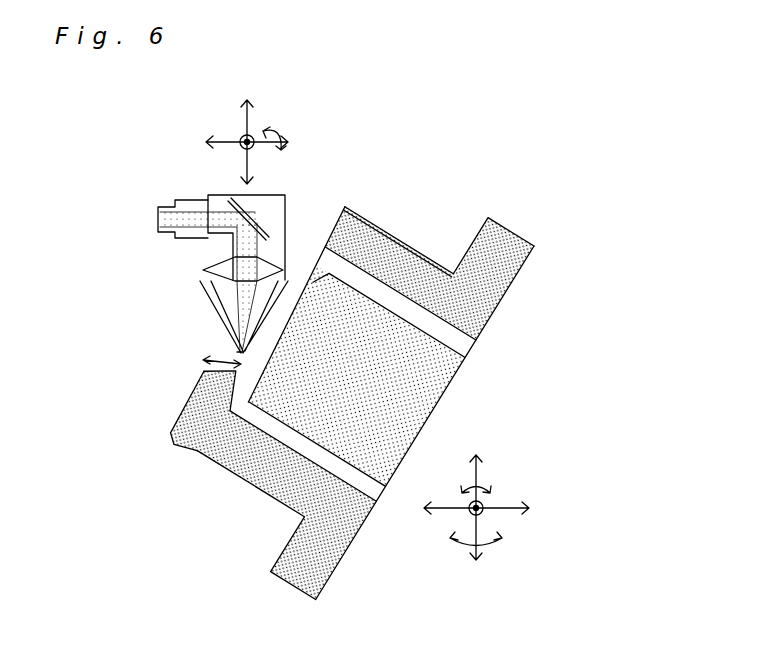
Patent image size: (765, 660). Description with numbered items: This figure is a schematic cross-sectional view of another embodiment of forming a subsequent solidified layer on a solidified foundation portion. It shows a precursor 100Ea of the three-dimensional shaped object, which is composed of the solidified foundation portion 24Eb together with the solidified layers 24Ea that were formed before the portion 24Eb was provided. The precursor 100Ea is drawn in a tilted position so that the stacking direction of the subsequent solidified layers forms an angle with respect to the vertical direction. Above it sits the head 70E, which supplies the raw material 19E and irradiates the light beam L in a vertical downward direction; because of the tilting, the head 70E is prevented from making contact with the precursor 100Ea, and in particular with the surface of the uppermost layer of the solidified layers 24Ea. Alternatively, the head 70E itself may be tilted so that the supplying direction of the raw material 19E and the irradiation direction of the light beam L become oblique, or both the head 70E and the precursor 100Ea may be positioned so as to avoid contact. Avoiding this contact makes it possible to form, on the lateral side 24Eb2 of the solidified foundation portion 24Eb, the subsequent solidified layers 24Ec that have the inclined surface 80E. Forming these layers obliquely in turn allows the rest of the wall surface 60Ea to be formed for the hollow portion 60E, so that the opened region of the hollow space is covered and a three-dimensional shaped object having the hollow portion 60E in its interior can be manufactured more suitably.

The precursor of the three-dimensional shaped object 100Ea is at (335, 337).
The head 70E is at (284, 219).
The light beam L is at (238, 347).
The raw material 19E is at (238, 351).
The inclined surface 80E is at (203, 360).
The hollow portion 60E is at (370, 220).
The wall surface 60Ea is at (352, 207).
The solidified layers 24Ea is at (385, 258).
The solidified foundation portion 24Eb is at (175, 445).
The lateral side of the solidified foundation portion 24Eb2 is at (149, 394).
The subsequent solidified layers 24Ec is at (230, 465).